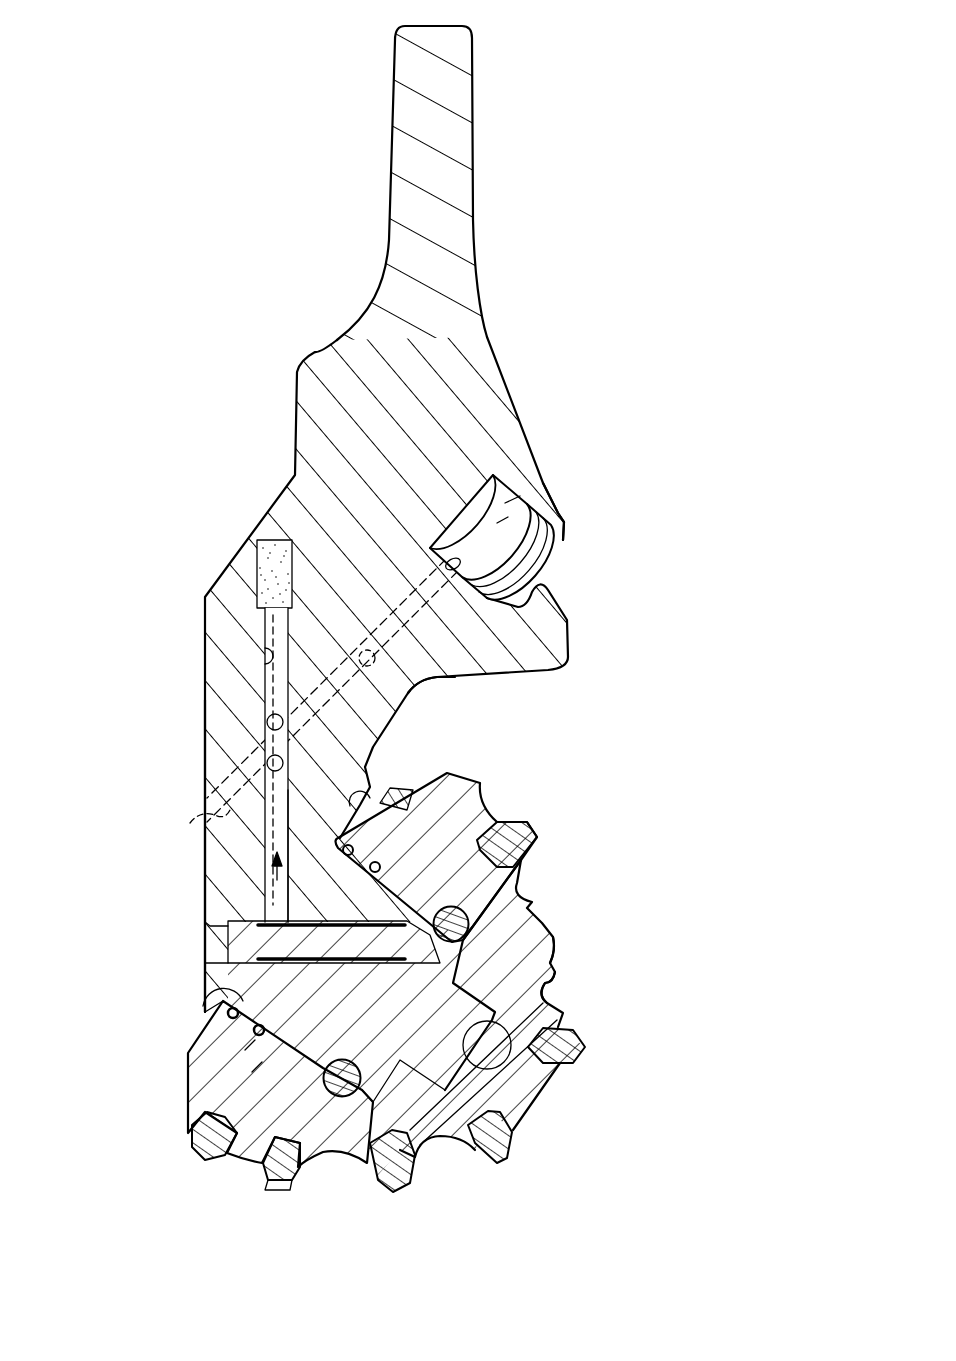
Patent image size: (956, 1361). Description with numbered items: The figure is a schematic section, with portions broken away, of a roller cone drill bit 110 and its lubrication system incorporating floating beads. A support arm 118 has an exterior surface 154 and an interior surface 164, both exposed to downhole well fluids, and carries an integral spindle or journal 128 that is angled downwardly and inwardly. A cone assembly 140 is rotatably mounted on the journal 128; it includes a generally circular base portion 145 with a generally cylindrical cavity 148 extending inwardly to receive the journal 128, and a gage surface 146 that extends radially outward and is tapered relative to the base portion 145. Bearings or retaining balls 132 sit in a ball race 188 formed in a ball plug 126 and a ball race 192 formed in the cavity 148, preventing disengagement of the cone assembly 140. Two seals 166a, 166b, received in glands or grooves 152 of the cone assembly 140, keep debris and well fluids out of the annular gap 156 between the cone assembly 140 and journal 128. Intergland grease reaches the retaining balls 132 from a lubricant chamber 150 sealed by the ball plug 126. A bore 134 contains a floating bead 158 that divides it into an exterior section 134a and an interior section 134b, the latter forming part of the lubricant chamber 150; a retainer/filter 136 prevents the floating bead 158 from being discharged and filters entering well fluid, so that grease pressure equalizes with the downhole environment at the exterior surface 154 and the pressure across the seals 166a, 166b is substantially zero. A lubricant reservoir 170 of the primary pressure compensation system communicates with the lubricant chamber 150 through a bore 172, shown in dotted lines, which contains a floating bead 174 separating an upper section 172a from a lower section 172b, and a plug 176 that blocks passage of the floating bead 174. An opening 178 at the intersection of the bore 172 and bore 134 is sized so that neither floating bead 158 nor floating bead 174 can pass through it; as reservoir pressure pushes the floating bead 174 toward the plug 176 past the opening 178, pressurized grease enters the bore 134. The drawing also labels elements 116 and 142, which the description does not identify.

The roller cone drill bit 110 is at (565, 92).
The shank 116 is at (345, 345).
The support arm 118 is at (262, 655).
The ball plug 126 is at (350, 945).
The spindle or journal 128 is at (292, 1183).
The bearings or retaining balls 132 is at (432, 908).
The bore 134 is at (277, 885).
The exterior section of bore 134a is at (268, 656).
The interior section of bore 134b is at (283, 797).
The retainer/filter 136 is at (282, 540).
The cone assembly 140 is at (553, 940).
The cutting element 142 is at (540, 830).
The base portion 145 is at (396, 788).
The gage surface 146 is at (450, 775).
The cavity 148 is at (538, 1097).
The lubricant chamber 150 is at (262, 916).
The glands or grooves 152 is at (222, 1003).
The exterior surface 154 is at (110, 957).
The annular gap 156 is at (205, 1022).
The floating bead 158 is at (267, 722).
The interior surface 164 is at (633, 537).
The seal 166a is at (355, 846).
The seal 166b is at (382, 866).
The lubricant reservoir 170 is at (480, 525).
The bore 172 is at (498, 675).
The upper section of bore 172a is at (443, 566).
The lower section of bore 172b is at (358, 660).
The floating bead 174 is at (432, 684).
The plug 176 is at (190, 823).
The opening 178 is at (267, 763).
The ball race 188 is at (440, 990).
The ball race 192 is at (440, 952).